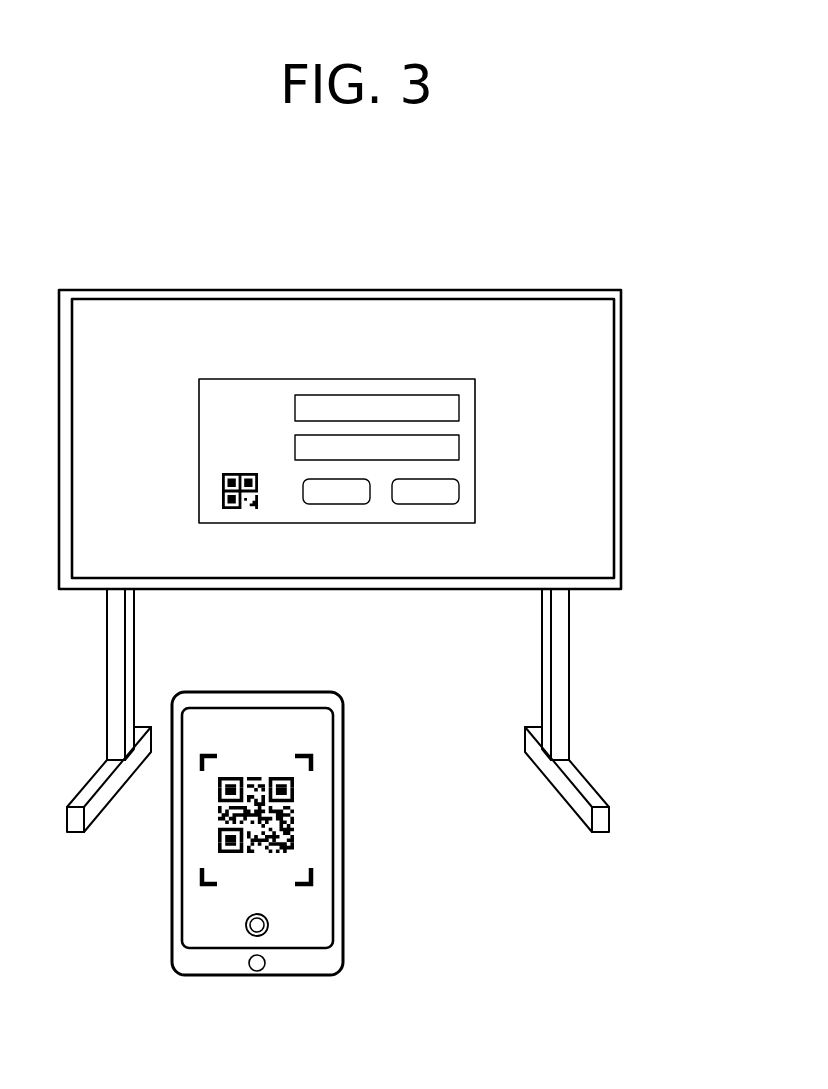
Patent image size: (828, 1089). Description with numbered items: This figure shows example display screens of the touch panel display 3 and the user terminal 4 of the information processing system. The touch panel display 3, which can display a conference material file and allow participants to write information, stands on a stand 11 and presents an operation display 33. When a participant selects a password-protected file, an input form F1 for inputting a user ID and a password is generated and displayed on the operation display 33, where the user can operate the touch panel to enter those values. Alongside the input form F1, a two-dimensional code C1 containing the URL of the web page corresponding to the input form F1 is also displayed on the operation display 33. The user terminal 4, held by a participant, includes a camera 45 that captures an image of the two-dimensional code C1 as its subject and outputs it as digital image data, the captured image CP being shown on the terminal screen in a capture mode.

The touch panel display 3 is at (579, 249).
The operation display 33 is at (483, 290).
The stand legs 11 is at (570, 668).
The input form F1 is at (199, 402).
The two-dimensional code C1 is at (222, 487).
The user terminal 4 is at (343, 740).
The camera 45 is at (255, 700).
The captured code image CP is at (312, 817).